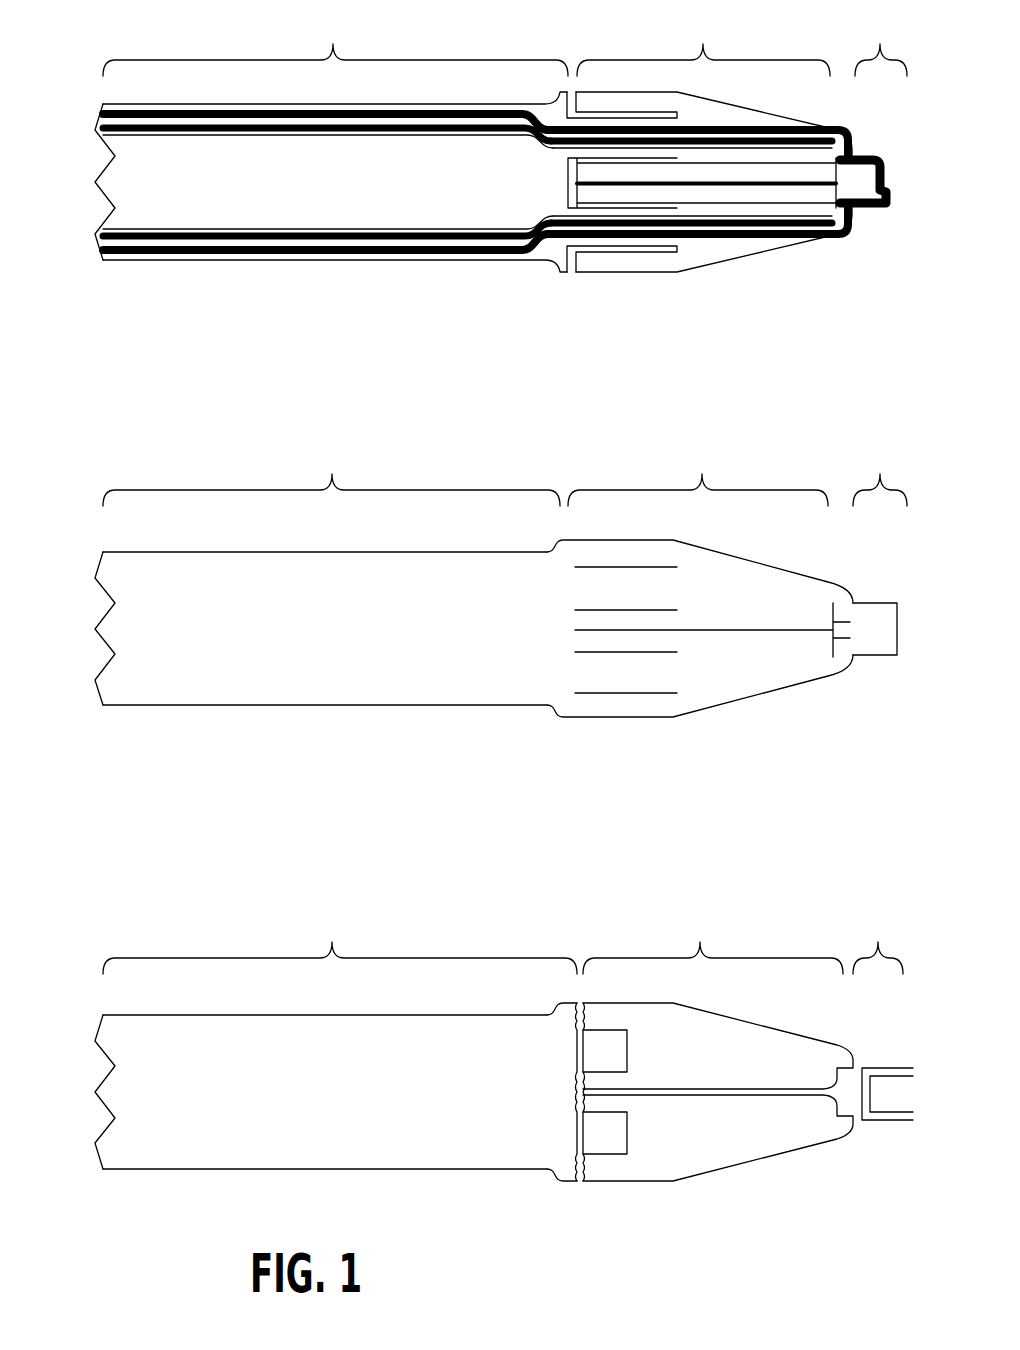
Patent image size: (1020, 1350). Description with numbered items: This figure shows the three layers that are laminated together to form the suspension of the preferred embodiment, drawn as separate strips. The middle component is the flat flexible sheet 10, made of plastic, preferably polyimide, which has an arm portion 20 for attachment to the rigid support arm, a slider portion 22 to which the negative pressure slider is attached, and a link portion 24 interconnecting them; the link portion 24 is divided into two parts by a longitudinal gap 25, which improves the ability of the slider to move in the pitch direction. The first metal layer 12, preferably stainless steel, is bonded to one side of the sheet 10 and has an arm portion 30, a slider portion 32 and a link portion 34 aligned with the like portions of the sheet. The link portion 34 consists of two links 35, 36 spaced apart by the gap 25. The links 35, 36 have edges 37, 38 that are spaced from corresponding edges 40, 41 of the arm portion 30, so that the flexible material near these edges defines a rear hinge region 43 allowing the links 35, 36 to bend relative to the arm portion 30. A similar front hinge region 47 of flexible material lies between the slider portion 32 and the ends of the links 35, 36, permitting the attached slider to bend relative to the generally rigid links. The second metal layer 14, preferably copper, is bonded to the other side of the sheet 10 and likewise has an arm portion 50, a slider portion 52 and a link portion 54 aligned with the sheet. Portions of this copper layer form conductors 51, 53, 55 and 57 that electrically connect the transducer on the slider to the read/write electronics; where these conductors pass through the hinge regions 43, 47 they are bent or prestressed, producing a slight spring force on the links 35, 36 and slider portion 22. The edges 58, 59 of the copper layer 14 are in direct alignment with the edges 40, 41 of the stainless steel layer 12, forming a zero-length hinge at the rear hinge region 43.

The second metal layer 14 is at (135, 202).
The arm portion 50 is at (335, 139).
The link portion 54 is at (710, 141).
The slider portion 52 is at (873, 106).
The edge 58 is at (578, 165).
The edge 59 is at (625, 305).
The conductor 51 is at (723, 137).
The conductor 53 is at (748, 143).
The conductor 55 is at (735, 220).
The conductor 57 is at (785, 228).
The flat flexible sheet 10 is at (137, 670).
The arm portion 20 is at (331, 471).
The link portion 24 is at (700, 577).
The slider portion 22 is at (880, 546).
The longitudinal gap 25 is at (735, 630).
The first metal layer 12 is at (135, 1137).
The arm portion 30 is at (340, 940).
The link portion 34 is at (713, 940).
The slider portion 32 is at (878, 940).
The link 35 is at (715, 1033).
The link 36 is at (723, 1147).
The edge 37 is at (580, 1097).
The edge 40 is at (577, 1082).
The edge 41 is at (577, 1172).
The rear hinge region 43 is at (583, 1170).
The edge 38 is at (627, 1113).
The front hinge region 47 is at (857, 1130).